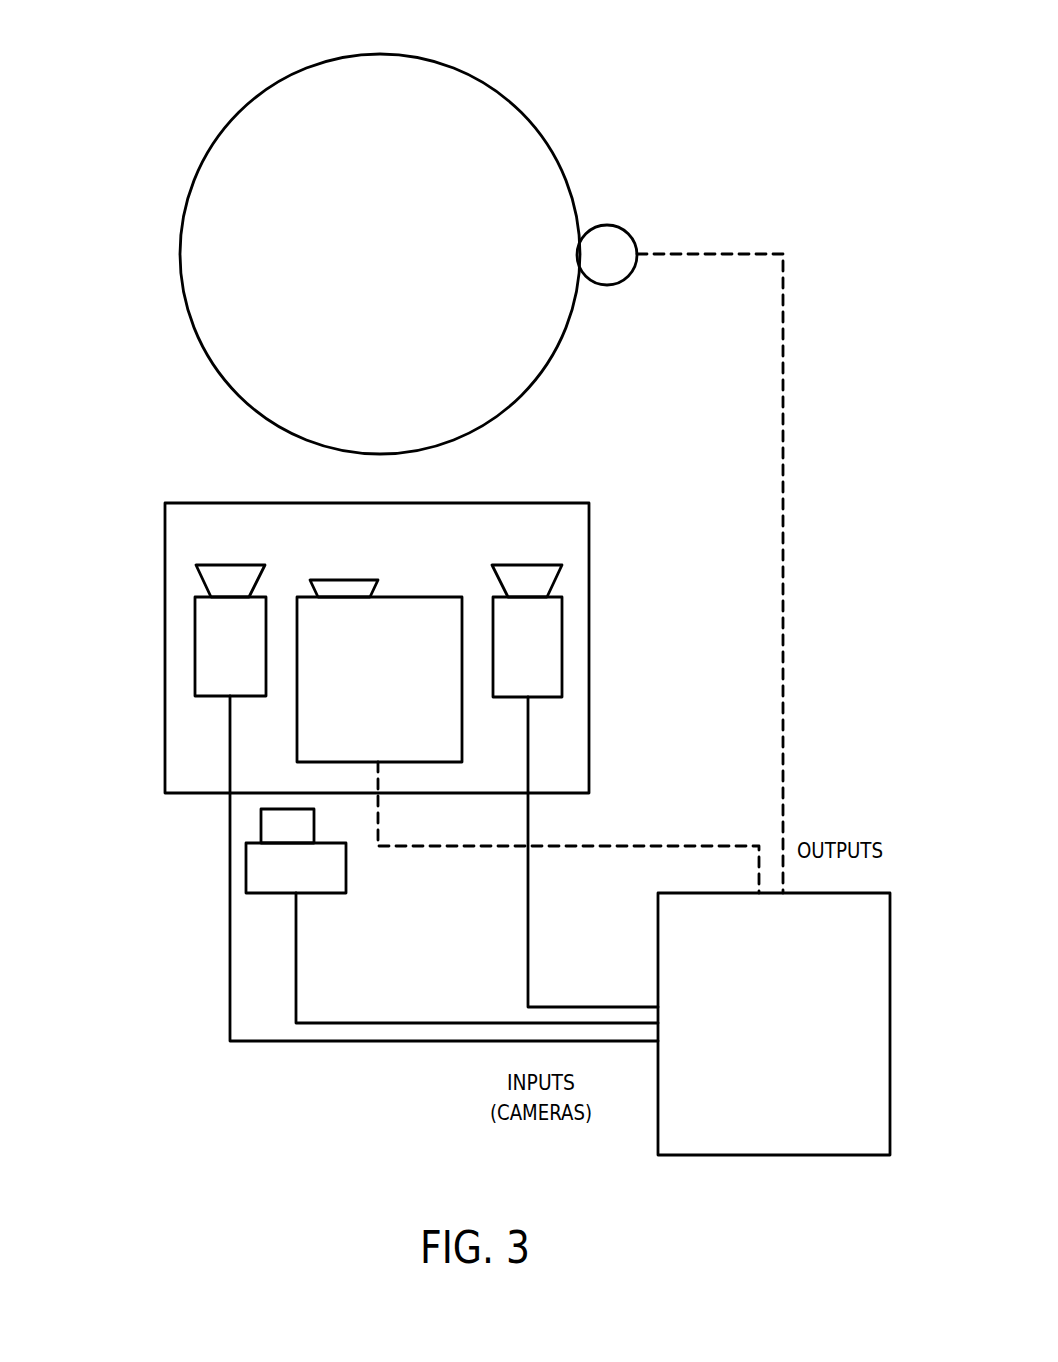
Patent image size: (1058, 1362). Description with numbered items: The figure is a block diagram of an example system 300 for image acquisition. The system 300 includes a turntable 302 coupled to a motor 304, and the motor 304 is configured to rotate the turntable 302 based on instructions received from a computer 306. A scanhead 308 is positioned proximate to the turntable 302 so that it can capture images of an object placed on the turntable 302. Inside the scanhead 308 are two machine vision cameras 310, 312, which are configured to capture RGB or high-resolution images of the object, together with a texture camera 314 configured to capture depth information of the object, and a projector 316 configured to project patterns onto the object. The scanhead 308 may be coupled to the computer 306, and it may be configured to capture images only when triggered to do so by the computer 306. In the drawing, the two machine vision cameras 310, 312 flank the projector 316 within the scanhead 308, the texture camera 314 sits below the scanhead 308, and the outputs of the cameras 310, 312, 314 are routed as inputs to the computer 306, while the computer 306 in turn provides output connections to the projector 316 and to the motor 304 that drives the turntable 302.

The system for image acquisition 300 is at (112, 86).
The turntable 302 is at (535, 376).
The motor 304 is at (626, 277).
The computer 306 is at (772, 1155).
The scanhead 308 is at (200, 503).
The machine vision camera 310 is at (195, 647).
The machine vision camera 312 is at (563, 647).
The texture camera 314 is at (332, 893).
The projector 316 is at (418, 597).